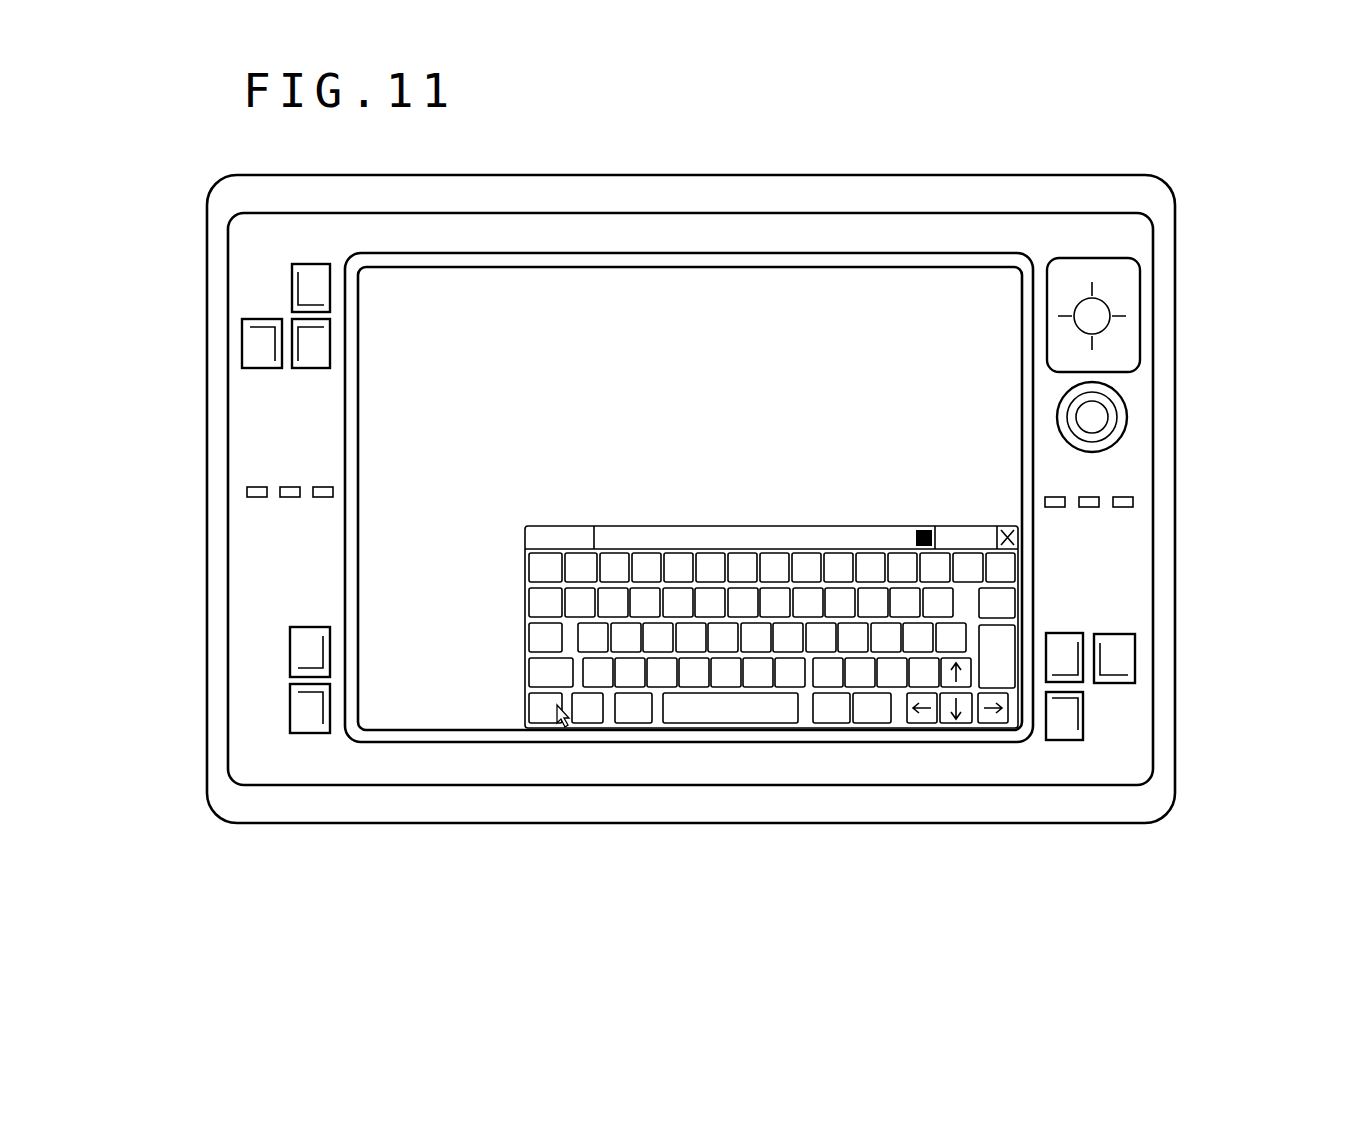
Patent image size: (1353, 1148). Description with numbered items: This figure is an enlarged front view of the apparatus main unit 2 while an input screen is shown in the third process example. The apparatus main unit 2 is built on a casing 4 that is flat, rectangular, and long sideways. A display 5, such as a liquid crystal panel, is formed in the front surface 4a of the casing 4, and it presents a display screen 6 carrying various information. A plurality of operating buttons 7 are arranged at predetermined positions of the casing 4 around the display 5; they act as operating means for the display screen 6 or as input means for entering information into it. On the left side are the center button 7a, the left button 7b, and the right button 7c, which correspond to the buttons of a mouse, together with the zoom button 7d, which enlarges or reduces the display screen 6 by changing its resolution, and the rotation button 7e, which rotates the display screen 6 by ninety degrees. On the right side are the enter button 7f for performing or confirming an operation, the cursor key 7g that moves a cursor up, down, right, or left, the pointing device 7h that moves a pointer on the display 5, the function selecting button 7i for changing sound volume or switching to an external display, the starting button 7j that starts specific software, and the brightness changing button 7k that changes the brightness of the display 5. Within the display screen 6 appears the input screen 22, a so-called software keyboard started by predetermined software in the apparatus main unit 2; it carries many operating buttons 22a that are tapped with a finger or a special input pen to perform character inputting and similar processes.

The apparatus main unit 2 is at (1226, 207).
The casing 4 is at (923, 198).
The front surface 4a is at (977, 197).
The display 5 is at (868, 383).
The display screen 6 is at (728, 383).
The operating buttons 7 is at (303, 268).
The center button 7a is at (323, 272).
The left button 7b is at (253, 352).
The right button 7c is at (320, 367).
The zoom button 7d is at (298, 656).
The rotation button 7e is at (303, 718).
The enter button 7f is at (1087, 312).
The cursor key 7g is at (1130, 337).
The pointing device 7h is at (1093, 416).
The function selecting button 7i is at (1072, 642).
The starting button 7j is at (1055, 730).
The brightness changing button 7k is at (1128, 666).
The input screen 22 is at (512, 630).
The operating buttons 22a is at (527, 558).